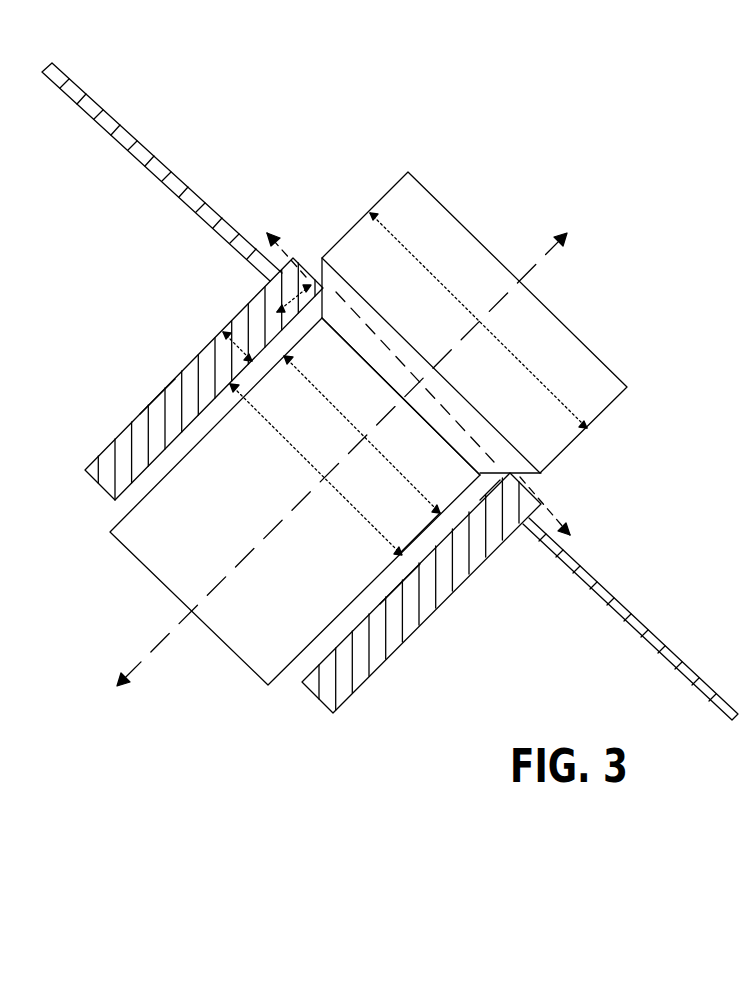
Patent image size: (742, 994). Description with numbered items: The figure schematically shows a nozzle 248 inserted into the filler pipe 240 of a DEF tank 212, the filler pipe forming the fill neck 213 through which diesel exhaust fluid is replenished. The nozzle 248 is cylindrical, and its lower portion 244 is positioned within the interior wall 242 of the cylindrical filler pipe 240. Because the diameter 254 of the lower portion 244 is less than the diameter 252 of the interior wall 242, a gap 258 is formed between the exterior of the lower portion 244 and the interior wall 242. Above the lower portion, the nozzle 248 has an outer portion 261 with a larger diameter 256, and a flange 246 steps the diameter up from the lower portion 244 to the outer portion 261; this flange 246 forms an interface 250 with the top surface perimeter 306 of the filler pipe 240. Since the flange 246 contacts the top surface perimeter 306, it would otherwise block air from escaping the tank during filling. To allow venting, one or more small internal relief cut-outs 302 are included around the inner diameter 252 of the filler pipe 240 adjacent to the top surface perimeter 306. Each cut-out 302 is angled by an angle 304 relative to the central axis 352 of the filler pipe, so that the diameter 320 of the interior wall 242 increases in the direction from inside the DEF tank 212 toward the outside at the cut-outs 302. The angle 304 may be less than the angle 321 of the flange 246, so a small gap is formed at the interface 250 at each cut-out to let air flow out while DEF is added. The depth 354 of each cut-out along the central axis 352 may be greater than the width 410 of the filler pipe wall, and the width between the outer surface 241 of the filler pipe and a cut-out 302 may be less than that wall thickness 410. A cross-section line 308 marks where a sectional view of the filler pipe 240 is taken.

The DEF tank 212 is at (112, 118).
The fill neck 213 is at (434, 128).
The filler pipe 240 is at (332, 678).
The outer surface of the filler pipe 241 is at (157, 397).
The interior wall 242 is at (188, 442).
The lower portion of the nozzle 244 is at (400, 582).
The flange 246 is at (523, 478).
The nozzle 248 is at (608, 405).
The interface 250 is at (322, 289).
The diameter of interior wall 252 is at (350, 503).
The diameter of lower portion 254 is at (383, 460).
The diameter of outer portion 256 is at (443, 287).
The gap 258 is at (425, 537).
The outer portion of the nozzle 261 is at (377, 186).
The internal relief cut-outs 302 is at (282, 273).
The angle of cut-outs 304 is at (494, 489).
The top surface perimeter 306 is at (306, 280).
The cross-section line 308 is at (370, 333).
The diameter of interior wall at cut-outs 320 is at (346, 349).
The angle of flange 321 is at (494, 465).
The central axis 352 is at (542, 260).
The depth of cut-out 354 is at (287, 292).
The width of the wall of the filler pipe 410 is at (227, 350).